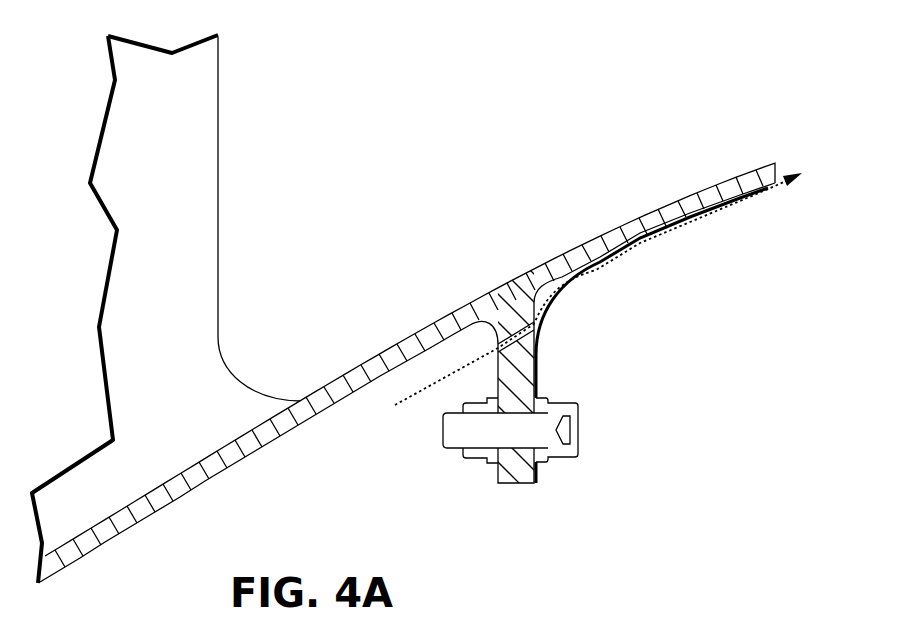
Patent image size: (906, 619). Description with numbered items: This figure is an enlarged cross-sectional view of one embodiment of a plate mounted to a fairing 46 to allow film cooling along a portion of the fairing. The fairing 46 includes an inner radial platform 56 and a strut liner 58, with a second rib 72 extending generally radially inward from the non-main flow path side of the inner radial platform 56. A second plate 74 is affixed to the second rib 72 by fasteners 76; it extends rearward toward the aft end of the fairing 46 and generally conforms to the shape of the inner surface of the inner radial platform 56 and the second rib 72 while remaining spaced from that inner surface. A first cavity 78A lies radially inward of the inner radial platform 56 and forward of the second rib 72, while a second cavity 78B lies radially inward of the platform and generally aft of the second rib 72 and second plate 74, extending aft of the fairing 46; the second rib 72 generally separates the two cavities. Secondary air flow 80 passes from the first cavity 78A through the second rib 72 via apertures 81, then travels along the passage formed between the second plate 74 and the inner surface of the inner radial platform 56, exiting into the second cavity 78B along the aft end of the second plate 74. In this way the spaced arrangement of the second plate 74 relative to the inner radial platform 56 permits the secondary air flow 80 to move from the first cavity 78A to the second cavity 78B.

The fairing 46 is at (421, 319).
The inner radial platform 56 is at (363, 364).
The strut liner 58 is at (200, 258).
The second rib 72 is at (507, 485).
The second plate 74 is at (558, 296).
The fasteners 76 is at (578, 418).
The first cavity 78A is at (299, 508).
The second cavity 78B is at (717, 324).
The secondary air flow 80 is at (416, 400).
The apertures 81 is at (505, 316).